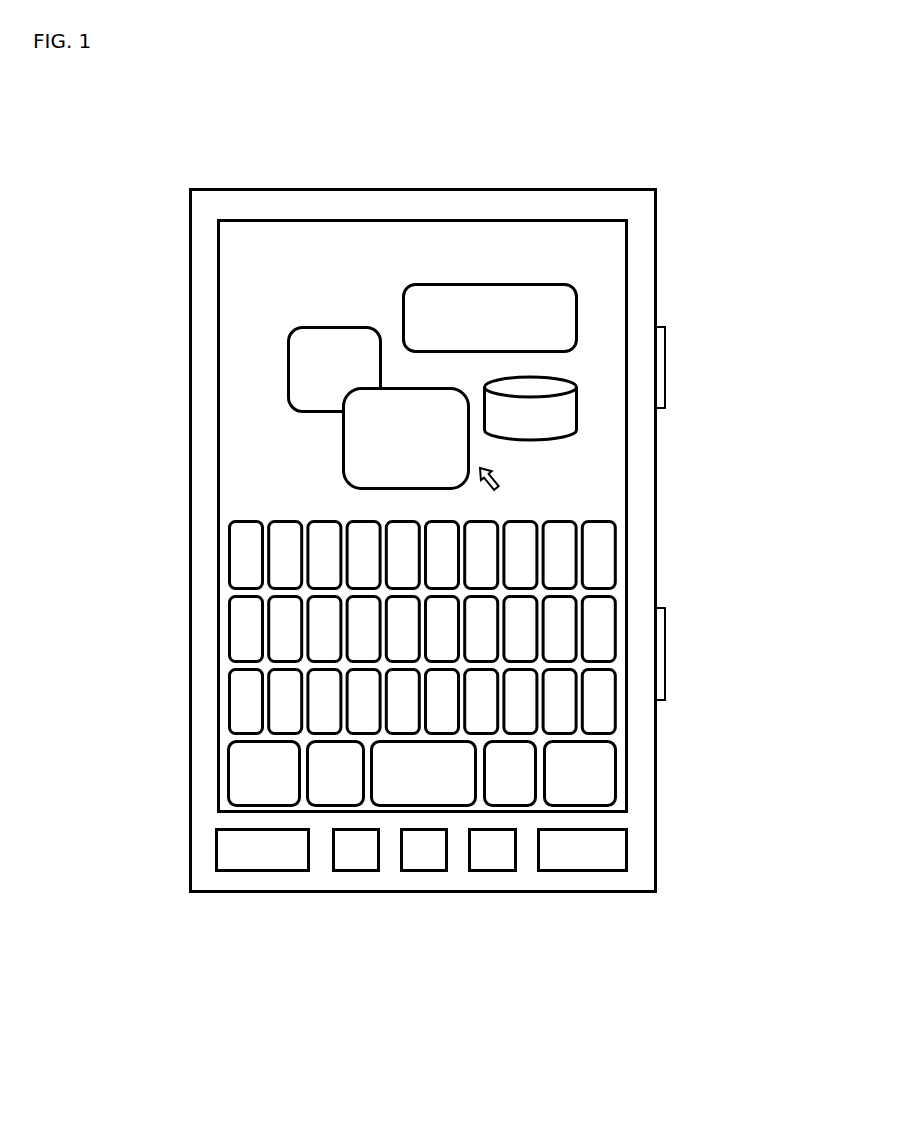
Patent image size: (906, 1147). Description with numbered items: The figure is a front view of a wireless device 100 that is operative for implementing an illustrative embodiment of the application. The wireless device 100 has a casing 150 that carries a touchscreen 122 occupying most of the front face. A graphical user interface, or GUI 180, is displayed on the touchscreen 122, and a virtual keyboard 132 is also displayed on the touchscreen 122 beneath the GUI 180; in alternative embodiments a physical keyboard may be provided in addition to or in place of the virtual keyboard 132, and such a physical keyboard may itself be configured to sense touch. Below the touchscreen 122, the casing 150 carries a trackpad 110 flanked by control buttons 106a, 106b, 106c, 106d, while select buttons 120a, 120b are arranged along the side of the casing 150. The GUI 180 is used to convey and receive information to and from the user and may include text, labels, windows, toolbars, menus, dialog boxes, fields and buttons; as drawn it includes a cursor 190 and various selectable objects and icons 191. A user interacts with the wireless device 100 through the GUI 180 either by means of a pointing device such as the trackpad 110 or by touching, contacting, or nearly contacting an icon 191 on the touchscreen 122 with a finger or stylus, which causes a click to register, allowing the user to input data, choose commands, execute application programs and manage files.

The wireless device 100 is at (478, 150).
The casing 150 is at (638, 187).
The graphical user interface 180 is at (485, 275).
The icon 191 is at (338, 432).
The cursor 190 is at (502, 479).
The select button 120a is at (670, 363).
The select button 120b is at (668, 673).
The touchscreen 122 is at (491, 641).
The virtual keyboard 132 is at (615, 618).
The control button 106a is at (247, 870).
The control button 106b is at (360, 870).
The trackpad 110 is at (427, 870).
The control button 106c is at (497, 870).
The control button 106d is at (595, 870).